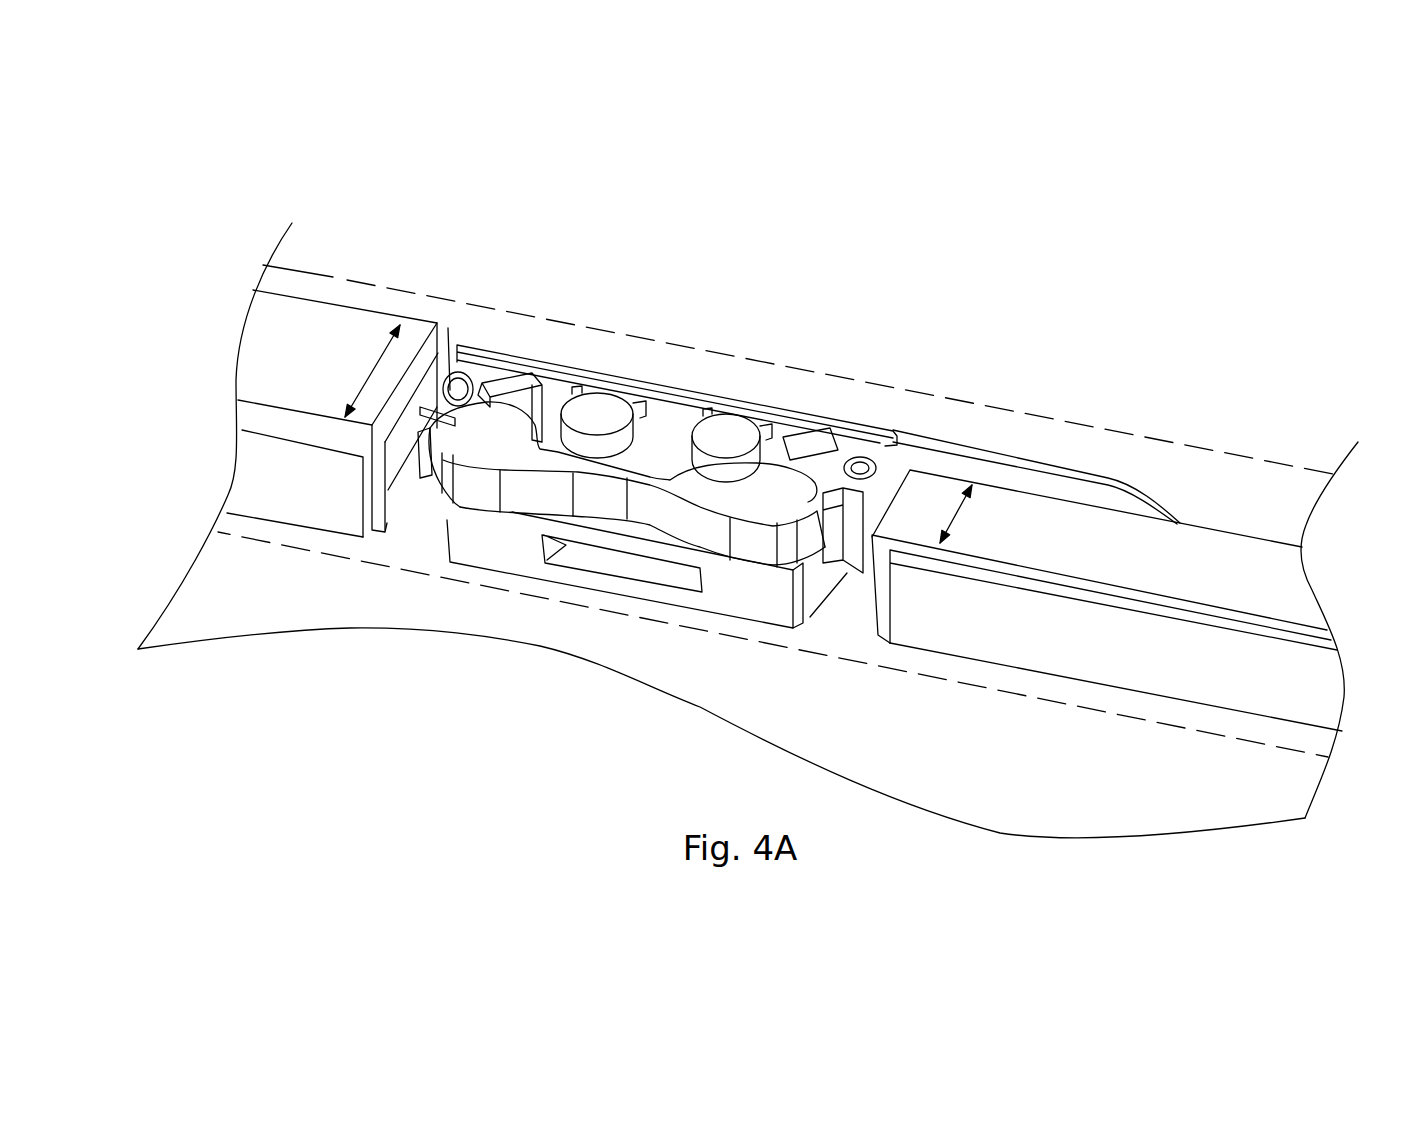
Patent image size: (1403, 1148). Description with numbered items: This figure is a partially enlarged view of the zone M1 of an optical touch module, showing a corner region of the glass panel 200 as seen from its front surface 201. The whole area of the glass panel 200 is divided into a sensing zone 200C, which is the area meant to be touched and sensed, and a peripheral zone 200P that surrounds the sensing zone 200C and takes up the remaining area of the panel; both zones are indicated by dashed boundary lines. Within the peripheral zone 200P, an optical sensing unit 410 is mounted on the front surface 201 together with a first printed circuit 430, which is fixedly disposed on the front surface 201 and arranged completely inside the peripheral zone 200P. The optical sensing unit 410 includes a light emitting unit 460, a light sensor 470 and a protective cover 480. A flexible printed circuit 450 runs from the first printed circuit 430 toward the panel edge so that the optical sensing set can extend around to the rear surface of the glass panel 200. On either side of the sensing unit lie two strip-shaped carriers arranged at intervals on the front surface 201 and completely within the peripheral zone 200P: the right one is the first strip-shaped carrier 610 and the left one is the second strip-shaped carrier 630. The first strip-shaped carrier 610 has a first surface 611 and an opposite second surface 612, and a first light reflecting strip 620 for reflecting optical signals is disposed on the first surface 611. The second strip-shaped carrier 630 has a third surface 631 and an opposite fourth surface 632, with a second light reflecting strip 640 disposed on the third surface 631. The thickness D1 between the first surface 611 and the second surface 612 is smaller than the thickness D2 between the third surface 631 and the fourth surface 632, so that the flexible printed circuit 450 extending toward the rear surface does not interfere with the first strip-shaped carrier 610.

The glass panel 200 is at (741, 489).
The front surface 201 is at (220, 572).
The peripheral zone 200P is at (435, 295).
The sensing zone 200C is at (788, 701).
The zone M1 is at (211, 166).
The optical sensing unit 410 is at (799, 515).
The first printed circuit 430 is at (560, 388).
The flexible printed circuit 450 is at (948, 445).
The light emitting unit 460 is at (725, 435).
The light sensor 470 is at (592, 555).
The protective cover 480 is at (652, 440).
The first strip-shaped carrier 610 is at (1107, 599).
The first surface 611 is at (1247, 617).
The second surface 612 is at (1267, 537).
The first light reflecting strip 620 is at (972, 660).
The second strip-shaped carrier 630 is at (338, 451).
The third surface 631 is at (282, 417).
The fourth surface 632 is at (363, 310).
The second light reflecting strip 640 is at (338, 537).
The thickness D1 is at (943, 514).
The thickness D2 is at (368, 371).